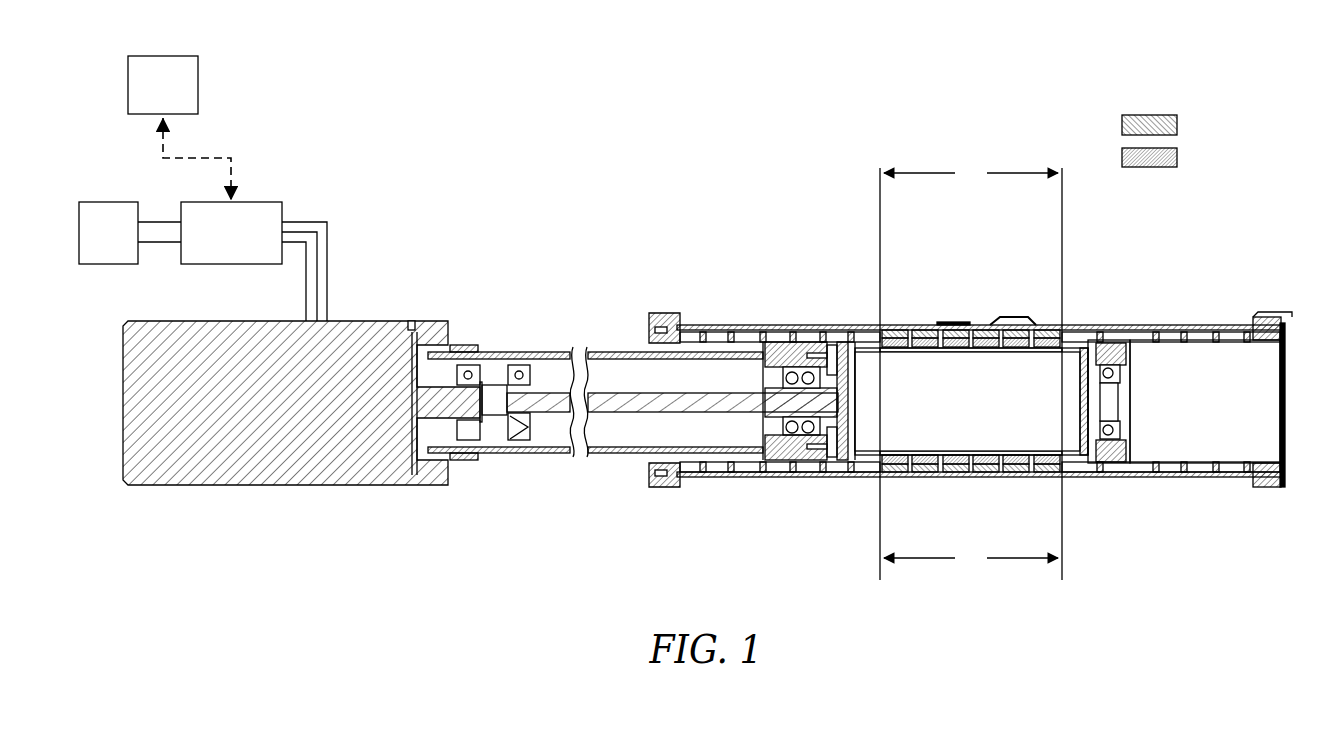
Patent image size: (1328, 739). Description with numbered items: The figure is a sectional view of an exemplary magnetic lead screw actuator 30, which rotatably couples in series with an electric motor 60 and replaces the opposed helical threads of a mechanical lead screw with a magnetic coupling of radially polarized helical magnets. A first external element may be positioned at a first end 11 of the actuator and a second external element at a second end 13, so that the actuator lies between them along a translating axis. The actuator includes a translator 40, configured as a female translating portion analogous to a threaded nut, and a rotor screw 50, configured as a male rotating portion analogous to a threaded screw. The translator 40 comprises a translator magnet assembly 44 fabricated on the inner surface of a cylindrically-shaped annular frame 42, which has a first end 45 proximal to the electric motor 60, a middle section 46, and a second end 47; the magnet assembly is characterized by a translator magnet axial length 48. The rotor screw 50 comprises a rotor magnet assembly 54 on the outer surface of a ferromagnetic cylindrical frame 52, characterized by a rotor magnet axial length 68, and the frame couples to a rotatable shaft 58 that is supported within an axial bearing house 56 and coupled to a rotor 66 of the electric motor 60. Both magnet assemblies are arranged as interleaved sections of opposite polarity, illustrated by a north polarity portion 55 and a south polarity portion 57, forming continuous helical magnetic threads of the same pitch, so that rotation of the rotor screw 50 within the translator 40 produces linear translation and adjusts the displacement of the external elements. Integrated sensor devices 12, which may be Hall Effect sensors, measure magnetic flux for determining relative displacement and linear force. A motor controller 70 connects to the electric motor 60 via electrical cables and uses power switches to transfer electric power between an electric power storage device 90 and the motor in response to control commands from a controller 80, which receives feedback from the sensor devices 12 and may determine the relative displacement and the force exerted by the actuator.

The first end 11 is at (120, 382).
The integrated sensor devices 12 is at (945, 327).
The second end 13 is at (1294, 440).
The magnetic lead screw actuator 30 is at (415, 250).
The translator 40 is at (972, 478).
The annular frame 42 is at (1168, 472).
The translator magnet assembly 44 is at (970, 330).
The first end 45 is at (691, 322).
The middle section 46 is at (1073, 322).
The second end 47 is at (1187, 320).
The translator magnet axial length 48 is at (960, 571).
The rotor screw 50 is at (935, 420).
The rotor frame 52 is at (842, 400).
The rotor magnet assembly 54 is at (985, 326).
The north polarity portion 55 is at (1043, 293).
The south polarity portion 57 is at (1044, 306).
The axial bearing house 56 is at (630, 458).
The rotatable shaft 58 is at (622, 414).
The electric motor 60 is at (390, 343).
The rotor 66 is at (445, 422).
The rotor magnet axial length 68 is at (960, 186).
The motor controller 70 is at (220, 245).
The controller 80 is at (152, 97).
The electric power storage device 90 is at (97, 245).